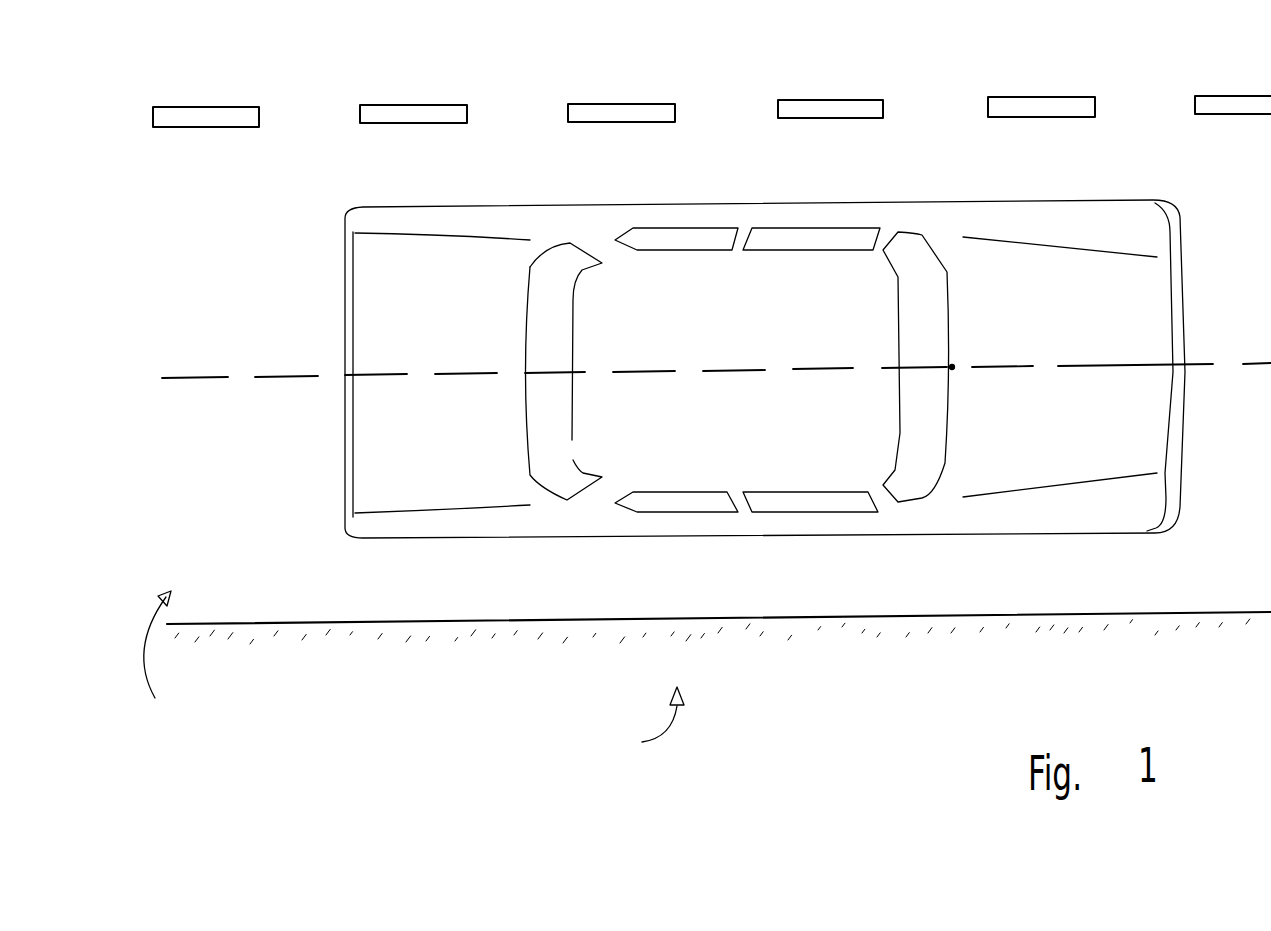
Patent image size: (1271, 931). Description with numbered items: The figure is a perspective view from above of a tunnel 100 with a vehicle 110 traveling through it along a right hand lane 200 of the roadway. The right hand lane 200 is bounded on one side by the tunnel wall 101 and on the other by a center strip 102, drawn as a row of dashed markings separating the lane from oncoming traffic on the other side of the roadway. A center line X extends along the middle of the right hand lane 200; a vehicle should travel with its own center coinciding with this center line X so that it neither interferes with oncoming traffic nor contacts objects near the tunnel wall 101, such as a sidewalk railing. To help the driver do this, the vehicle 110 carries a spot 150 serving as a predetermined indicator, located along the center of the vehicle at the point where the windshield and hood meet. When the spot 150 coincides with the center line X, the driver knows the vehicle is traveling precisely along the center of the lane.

The tunnel 100 is at (631, 725).
The tunnel wall 101 is at (490, 625).
The center strip 102 is at (676, 107).
The vehicle 110 is at (1131, 517).
The spot 150 is at (953, 357).
The right hand lane 200 is at (175, 658).
The center line X is at (305, 377).